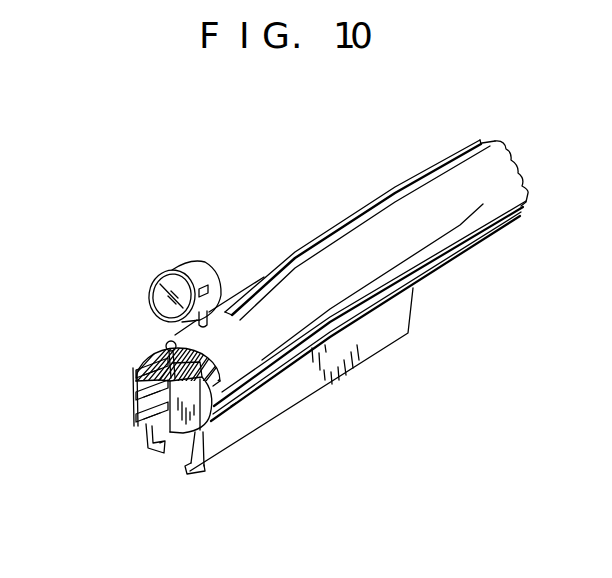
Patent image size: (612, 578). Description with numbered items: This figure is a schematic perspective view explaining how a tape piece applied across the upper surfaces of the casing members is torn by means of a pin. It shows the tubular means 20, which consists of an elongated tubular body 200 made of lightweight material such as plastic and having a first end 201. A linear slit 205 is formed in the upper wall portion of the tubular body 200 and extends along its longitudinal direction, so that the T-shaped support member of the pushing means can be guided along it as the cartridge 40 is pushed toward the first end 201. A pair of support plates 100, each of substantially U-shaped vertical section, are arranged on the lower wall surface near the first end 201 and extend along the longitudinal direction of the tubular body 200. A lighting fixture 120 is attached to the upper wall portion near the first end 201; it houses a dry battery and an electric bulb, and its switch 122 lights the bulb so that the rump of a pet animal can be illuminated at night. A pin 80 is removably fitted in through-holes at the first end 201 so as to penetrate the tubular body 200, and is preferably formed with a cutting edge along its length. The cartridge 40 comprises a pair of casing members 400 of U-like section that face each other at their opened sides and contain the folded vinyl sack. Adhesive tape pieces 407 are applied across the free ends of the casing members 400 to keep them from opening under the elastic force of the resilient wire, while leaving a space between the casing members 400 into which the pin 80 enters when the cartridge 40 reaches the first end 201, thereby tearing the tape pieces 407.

The tubular means 20 is at (430, 277).
The cartridge 40 is at (128, 372).
The pin 80 is at (158, 346).
The support plates 100 is at (297, 400).
The lighting fixture 120 is at (182, 252).
The switch 122 is at (208, 286).
The tubular body 200 is at (434, 230).
The first end 201 is at (233, 407).
The linear slit 205 is at (303, 257).
The casing members 400 is at (135, 388).
The adhesive tape pieces 407 is at (212, 400).